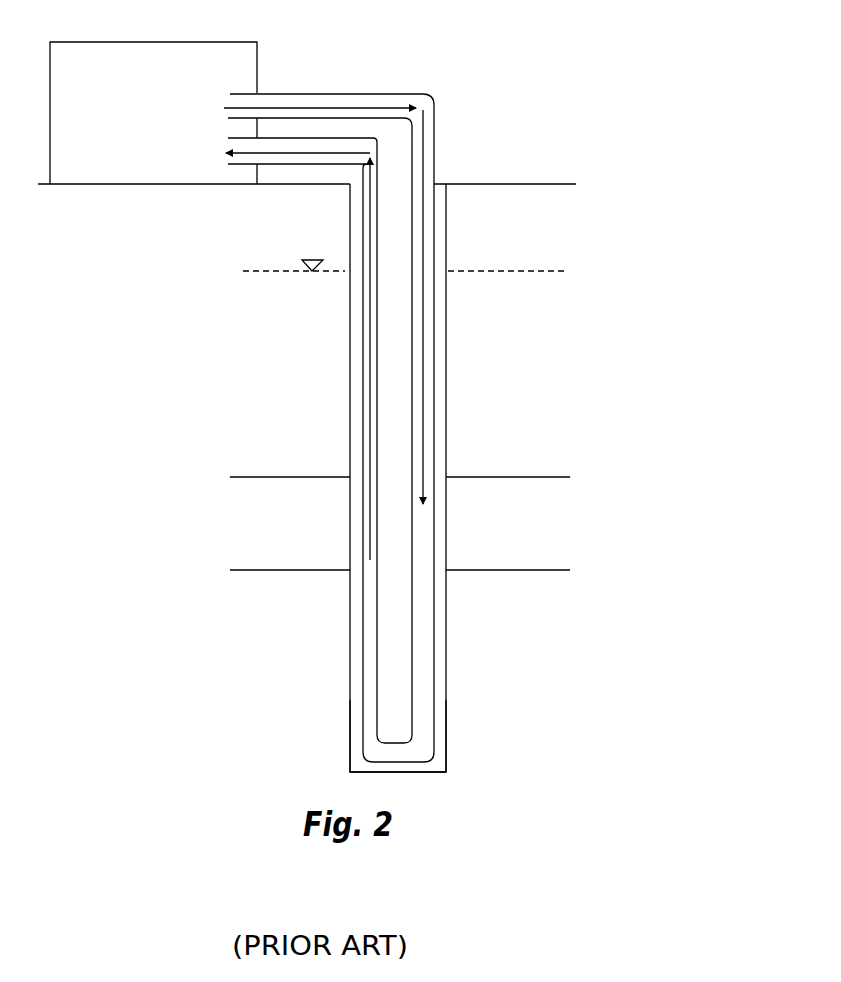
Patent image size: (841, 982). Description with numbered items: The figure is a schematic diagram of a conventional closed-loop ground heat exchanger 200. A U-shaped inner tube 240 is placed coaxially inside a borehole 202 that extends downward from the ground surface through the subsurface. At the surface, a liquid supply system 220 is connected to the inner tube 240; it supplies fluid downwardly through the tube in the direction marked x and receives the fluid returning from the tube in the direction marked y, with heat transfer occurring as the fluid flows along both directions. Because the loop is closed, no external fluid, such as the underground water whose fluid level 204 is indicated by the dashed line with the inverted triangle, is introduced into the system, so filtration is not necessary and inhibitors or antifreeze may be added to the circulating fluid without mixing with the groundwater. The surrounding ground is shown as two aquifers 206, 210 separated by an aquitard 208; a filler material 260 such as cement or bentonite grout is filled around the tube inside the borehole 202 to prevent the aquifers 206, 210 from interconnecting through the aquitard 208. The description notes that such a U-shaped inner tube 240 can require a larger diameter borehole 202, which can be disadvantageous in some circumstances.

The closed-loop ground heat exchanger 200 is at (340, 40).
The liquid supply system 220 is at (153, 113).
The borehole 202 is at (446, 248).
The fluid level 204 is at (384, 267).
The aquifer 206 is at (307, 270).
The aquitard 208 is at (400, 523).
The aquifer 210 is at (437, 715).
The U-shaped inner tube 240 is at (436, 438).
The filler material 260 is at (398, 632).